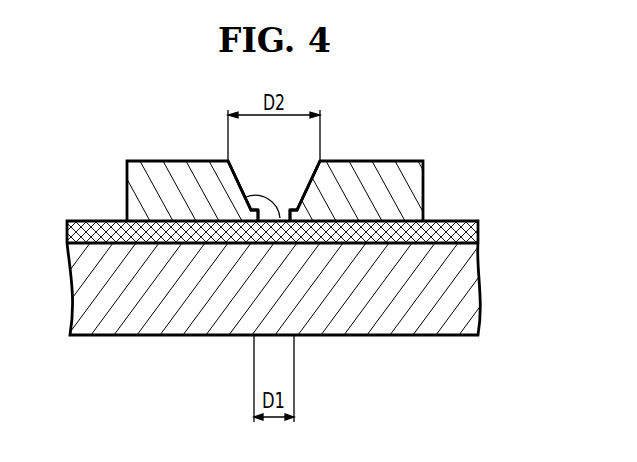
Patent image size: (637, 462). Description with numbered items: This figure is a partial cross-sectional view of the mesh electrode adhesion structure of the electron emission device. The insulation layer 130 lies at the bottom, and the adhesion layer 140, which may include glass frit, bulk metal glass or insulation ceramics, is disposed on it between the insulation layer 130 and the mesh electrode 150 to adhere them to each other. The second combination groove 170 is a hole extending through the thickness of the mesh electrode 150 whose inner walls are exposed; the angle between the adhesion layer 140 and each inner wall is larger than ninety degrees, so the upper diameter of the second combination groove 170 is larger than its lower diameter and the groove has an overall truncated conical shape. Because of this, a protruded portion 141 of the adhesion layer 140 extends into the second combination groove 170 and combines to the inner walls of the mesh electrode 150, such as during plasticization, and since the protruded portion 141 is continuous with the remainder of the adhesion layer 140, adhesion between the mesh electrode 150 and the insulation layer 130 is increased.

The insulation layer 130 is at (475, 288).
The adhesion layer 140 is at (478, 232).
The protruded portion 141 is at (294, 213).
The mesh electrode 150 is at (418, 190).
The second combination groove 170 is at (312, 173).